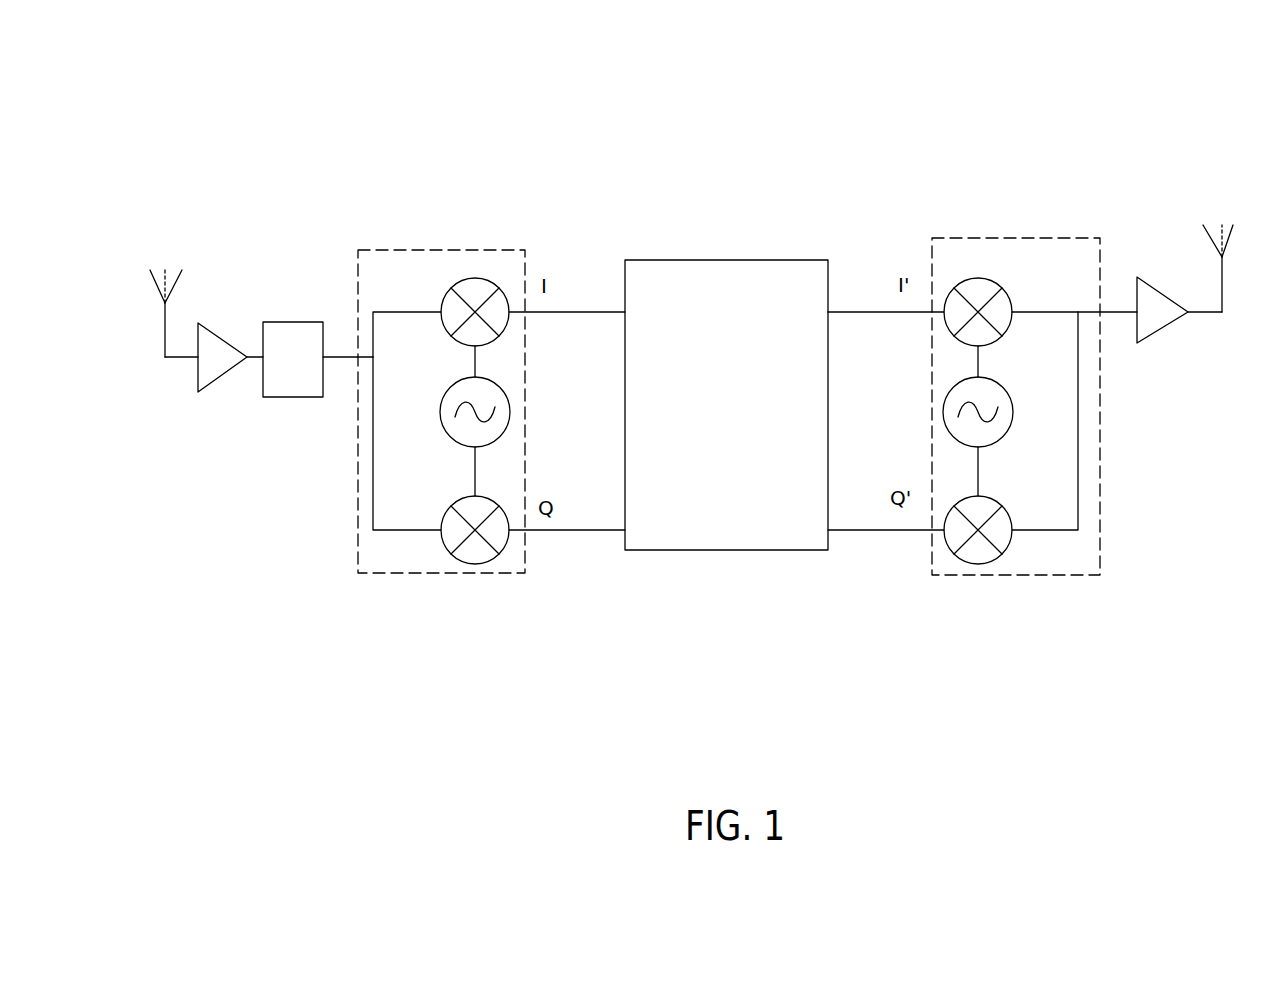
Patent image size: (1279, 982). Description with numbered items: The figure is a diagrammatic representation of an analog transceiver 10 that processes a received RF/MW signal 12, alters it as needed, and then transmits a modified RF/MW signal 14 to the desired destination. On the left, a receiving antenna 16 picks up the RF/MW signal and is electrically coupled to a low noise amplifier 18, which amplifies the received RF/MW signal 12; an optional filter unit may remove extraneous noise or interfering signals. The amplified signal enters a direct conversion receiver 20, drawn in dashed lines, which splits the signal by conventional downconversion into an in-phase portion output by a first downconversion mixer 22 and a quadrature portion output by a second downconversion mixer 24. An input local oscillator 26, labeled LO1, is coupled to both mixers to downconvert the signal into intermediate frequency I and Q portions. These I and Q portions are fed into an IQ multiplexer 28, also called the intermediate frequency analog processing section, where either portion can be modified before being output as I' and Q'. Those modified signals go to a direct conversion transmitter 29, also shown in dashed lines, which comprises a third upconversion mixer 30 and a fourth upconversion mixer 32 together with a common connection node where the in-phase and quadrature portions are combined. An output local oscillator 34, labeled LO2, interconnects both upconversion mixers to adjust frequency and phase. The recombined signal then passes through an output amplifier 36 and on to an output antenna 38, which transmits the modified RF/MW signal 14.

The analog transceiver 10 is at (885, 140).
The received RF/MW signal 12 is at (178, 358).
The modified RF/MW signal 14 is at (1110, 312).
The receiving antenna 16 is at (152, 280).
The low noise amplifier 18 is at (210, 382).
The direct conversion receiver 20 is at (422, 250).
The first downconversion mixer 22 is at (482, 278).
The second downconversion mixer 24 is at (478, 564).
The input local oscillator 26 is at (441, 427).
The IQ multiplexer 28 is at (697, 260).
The direct conversion transmitter 29 is at (953, 238).
The third upconversion mixer 30 is at (988, 276).
The fourth upconversion mixer 32 is at (1008, 548).
The output local oscillator 34 is at (1011, 425).
The output amplifier 36 is at (1160, 327).
The output antenna 38 is at (1222, 257).